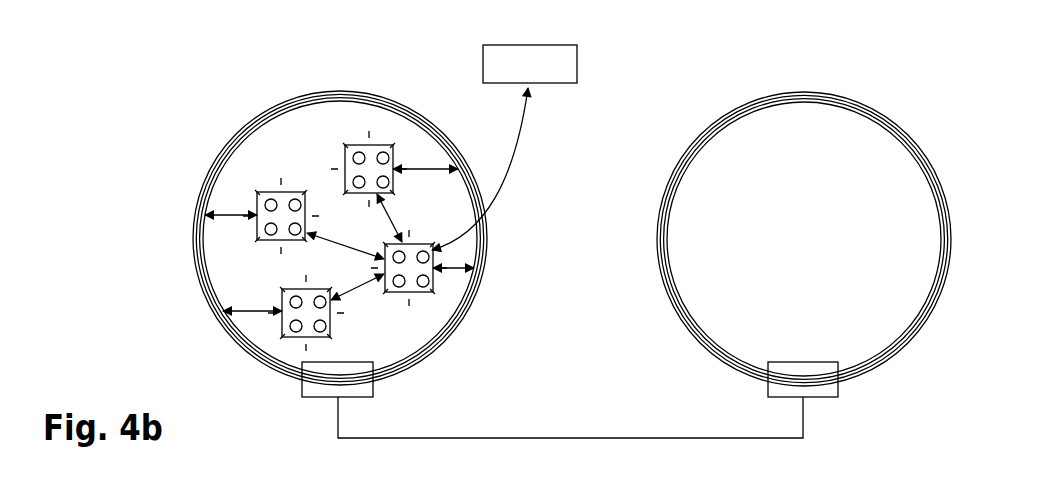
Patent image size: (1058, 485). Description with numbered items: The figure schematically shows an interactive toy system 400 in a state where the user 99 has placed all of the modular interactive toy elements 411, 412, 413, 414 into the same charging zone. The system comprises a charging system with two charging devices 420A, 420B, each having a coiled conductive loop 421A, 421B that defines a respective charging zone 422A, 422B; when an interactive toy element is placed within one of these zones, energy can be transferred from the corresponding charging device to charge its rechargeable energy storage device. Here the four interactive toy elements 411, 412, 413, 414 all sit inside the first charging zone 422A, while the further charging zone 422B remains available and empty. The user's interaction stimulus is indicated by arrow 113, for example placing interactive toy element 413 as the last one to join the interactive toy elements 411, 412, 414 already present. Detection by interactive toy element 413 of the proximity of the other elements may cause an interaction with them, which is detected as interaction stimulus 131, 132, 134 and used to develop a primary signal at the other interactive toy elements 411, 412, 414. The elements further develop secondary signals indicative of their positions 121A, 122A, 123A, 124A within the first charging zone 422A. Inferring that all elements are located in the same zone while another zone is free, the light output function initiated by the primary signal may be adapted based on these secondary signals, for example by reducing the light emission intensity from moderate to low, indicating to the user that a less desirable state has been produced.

The interactive toy system 400 is at (130, 258).
The user 99 is at (530, 64).
The user's interaction stimulus 113 is at (512, 168).
The position of interactive toy element 411 121A is at (417, 165).
The position of interactive toy element 412 122A is at (233, 207).
The position of interactive toy element 413 123A is at (450, 268).
The position of interactive toy element 414 124A is at (250, 315).
The interaction stimulus 131 is at (282, 204).
The interaction stimulus 132 is at (350, 244).
The interaction stimulus 134 is at (360, 290).
The modular interactive toy element 411 is at (370, 163).
The modular interactive toy element 412 is at (220, 143).
The modular interactive toy element 413 is at (412, 290).
The modular interactive toy element 414 is at (282, 298).
The charging device 420A is at (552, 400).
The charging device 420B is at (803, 379).
The coiled conductive loop 421A is at (277, 371).
The coiled conductive loop 421B is at (718, 355).
The first charging zone 422A is at (377, 340).
The further charging zone 422B is at (847, 302).